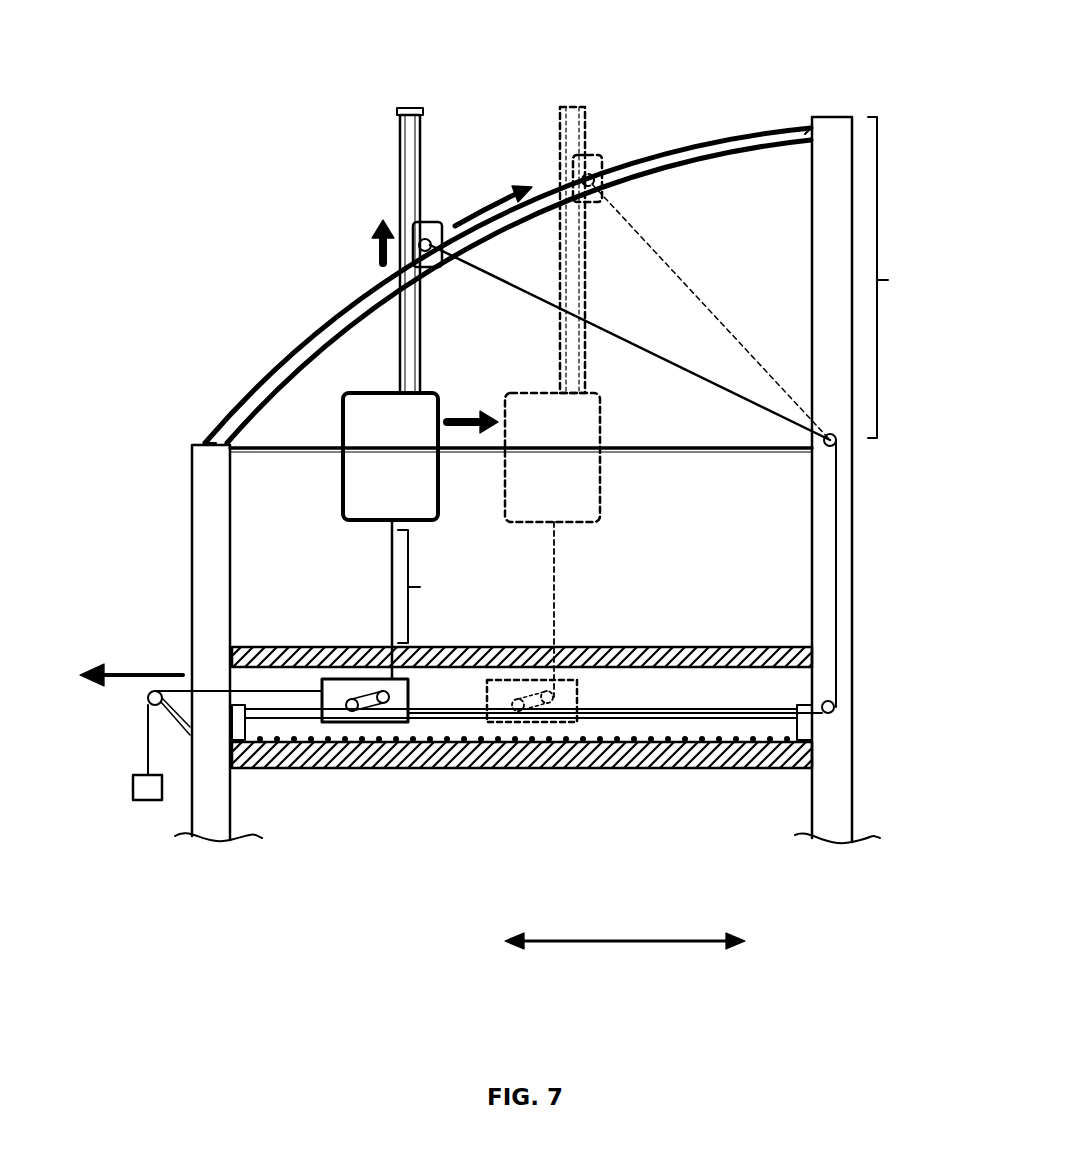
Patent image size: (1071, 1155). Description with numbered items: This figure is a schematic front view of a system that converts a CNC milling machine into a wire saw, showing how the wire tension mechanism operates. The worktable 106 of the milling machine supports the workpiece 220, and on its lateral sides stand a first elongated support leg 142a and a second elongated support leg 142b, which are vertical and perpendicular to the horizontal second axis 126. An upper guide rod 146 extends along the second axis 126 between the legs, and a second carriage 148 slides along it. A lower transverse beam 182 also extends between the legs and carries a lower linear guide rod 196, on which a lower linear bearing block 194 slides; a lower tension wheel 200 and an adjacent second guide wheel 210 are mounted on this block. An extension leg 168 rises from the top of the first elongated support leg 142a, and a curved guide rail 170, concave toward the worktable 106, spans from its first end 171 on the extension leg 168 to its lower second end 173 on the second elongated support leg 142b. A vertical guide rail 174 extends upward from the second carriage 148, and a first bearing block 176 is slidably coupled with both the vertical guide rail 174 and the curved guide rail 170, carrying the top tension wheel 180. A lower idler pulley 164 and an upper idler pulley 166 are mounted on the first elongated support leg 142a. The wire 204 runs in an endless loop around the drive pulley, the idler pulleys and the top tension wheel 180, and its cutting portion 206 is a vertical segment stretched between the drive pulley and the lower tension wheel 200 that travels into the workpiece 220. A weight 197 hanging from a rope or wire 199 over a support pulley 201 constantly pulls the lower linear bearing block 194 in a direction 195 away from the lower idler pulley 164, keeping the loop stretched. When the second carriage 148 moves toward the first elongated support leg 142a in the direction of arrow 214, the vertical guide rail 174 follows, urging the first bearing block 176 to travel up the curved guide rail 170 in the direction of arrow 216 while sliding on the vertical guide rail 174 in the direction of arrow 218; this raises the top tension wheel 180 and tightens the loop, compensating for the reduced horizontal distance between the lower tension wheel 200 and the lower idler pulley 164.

The worktable 106 is at (540, 770).
The second axis 126 is at (645, 944).
The first elongated support leg 142a is at (855, 545).
The second elongated support leg 142b is at (192, 483).
The upper guide rod 146 is at (318, 452).
The second carriage 148 is at (365, 522).
The lower idler pulley 164 is at (834, 705).
The upper idler pulley 166 is at (830, 446).
The extension leg 168 is at (906, 277).
The curved guide rail 170 is at (752, 132).
The first end 171 is at (811, 130).
The second end 173 is at (205, 443).
The vertical guide rail 174 is at (400, 150).
The first bearing block 176 is at (432, 222).
The top tension wheel 180 is at (420, 232).
The lower transverse beam 182 is at (708, 742).
The lower linear bearing block 194 is at (333, 678).
The direction 195 is at (131, 672).
The lower linear guide rod 196 is at (292, 722).
The weight 197 is at (140, 802).
The rope or wire 199 is at (217, 690).
The lower tension wheel 200 is at (383, 705).
The support pulley 201 is at (148, 702).
The wire 204 is at (630, 333).
The cutting portion 206 is at (436, 586).
The second guide wheel 210 is at (352, 712).
The arrow 214 is at (476, 390).
The arrow 216 is at (494, 196).
The arrow 218 is at (375, 243).
The workpiece 220 is at (776, 647).